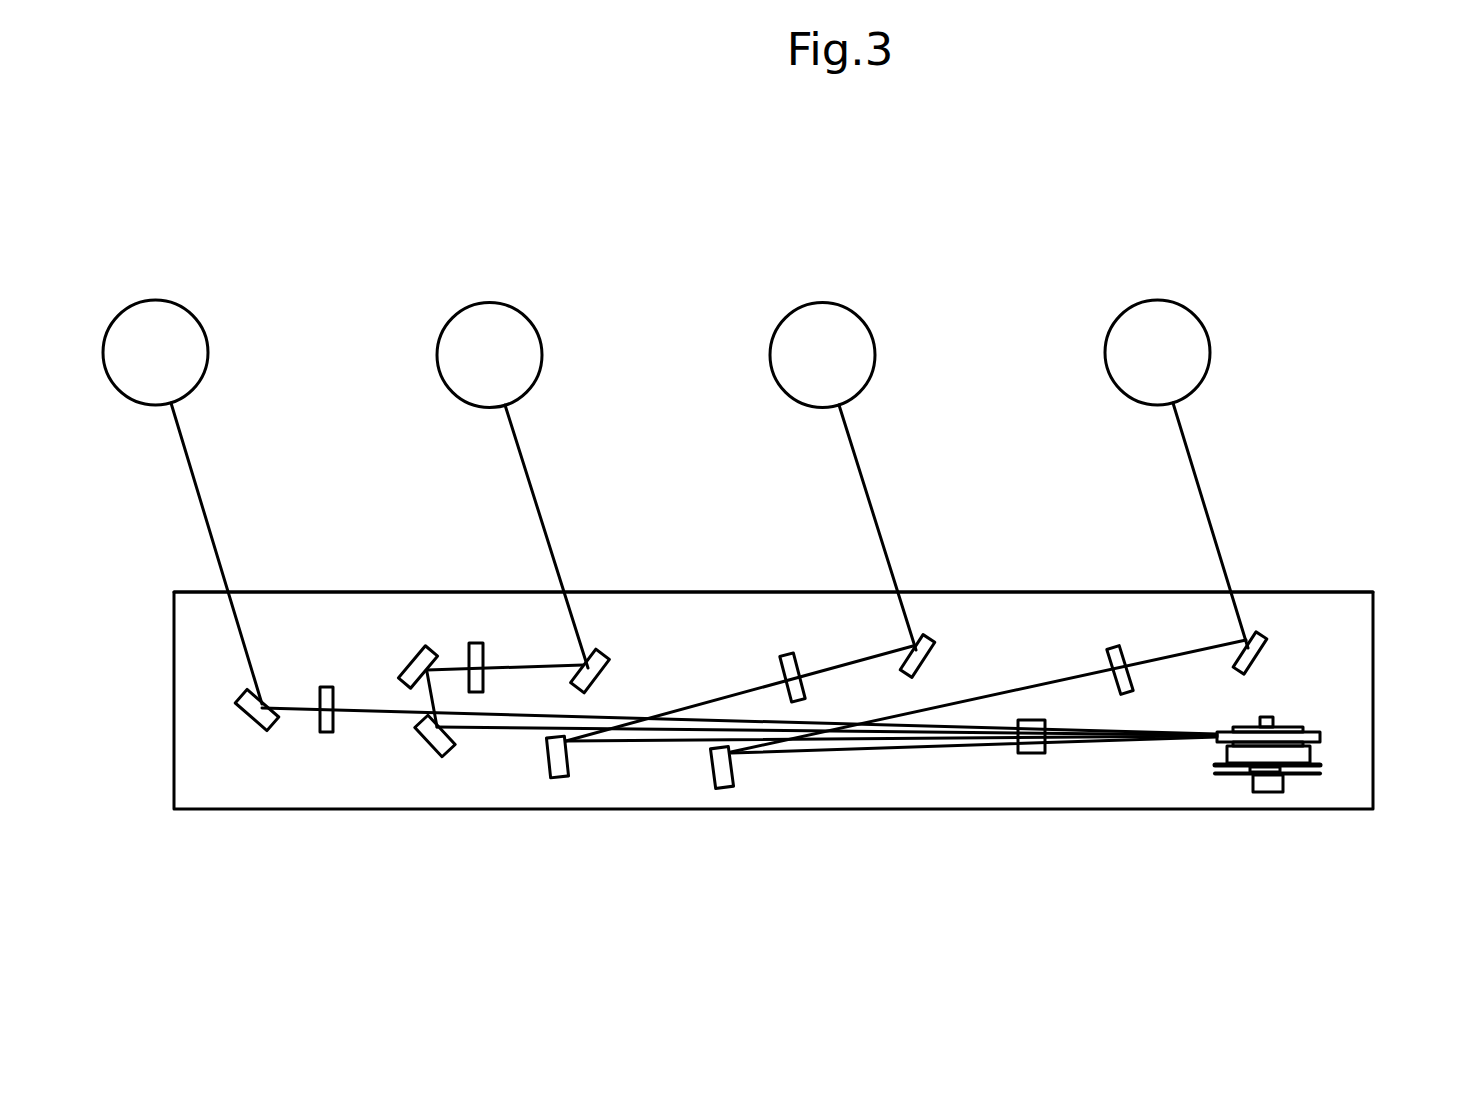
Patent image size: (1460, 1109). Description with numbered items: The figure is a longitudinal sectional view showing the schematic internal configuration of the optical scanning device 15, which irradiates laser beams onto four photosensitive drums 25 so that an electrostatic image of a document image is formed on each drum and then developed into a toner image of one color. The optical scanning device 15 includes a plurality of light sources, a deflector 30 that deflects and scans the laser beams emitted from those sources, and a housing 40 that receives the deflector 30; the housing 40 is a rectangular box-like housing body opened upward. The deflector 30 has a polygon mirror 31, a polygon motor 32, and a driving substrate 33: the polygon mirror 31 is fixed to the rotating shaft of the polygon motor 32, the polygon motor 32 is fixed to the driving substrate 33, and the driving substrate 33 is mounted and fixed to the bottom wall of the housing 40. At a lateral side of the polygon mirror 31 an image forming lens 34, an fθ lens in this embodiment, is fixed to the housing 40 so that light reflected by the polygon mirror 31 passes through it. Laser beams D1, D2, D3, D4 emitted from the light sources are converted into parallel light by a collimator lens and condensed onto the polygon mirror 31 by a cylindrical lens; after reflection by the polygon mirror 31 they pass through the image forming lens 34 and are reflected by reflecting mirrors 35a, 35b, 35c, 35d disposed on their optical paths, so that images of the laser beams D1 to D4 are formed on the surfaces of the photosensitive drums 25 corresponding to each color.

The optical scanning device 15 is at (1072, 593).
The photosensitive drum 25 is at (200, 325).
The deflector 30 is at (1325, 719).
The polygon mirror 31 is at (1320, 737).
The polygon motor 32 is at (1312, 757).
The driving substrate 33 is at (1318, 766).
The image forming lens 34 is at (1030, 755).
The reflecting mirror 35a is at (1258, 661).
The reflecting mirror 35b is at (930, 661).
The reflecting mirror 35c is at (587, 662).
The reflecting mirror 35d is at (250, 722).
The housing 40 is at (1284, 592).
The laser beam D1 is at (775, 755).
The laser beam D2 is at (602, 744).
The laser beam D3 is at (470, 730).
The laser beam D4 is at (349, 712).